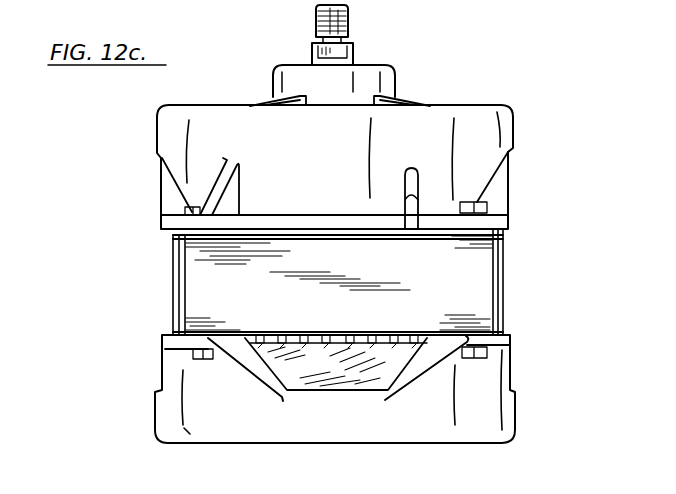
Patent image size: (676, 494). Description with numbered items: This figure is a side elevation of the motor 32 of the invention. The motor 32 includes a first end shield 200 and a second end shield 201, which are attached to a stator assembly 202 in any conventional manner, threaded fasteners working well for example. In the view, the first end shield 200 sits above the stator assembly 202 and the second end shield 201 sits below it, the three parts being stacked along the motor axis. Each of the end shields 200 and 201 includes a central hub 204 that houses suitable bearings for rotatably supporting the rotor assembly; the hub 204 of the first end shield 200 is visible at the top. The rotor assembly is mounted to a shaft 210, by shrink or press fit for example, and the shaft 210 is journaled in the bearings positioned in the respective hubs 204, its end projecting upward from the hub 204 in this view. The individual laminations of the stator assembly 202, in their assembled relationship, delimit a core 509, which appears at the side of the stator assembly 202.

The motor 32 is at (135, 437).
The first end shield 200 is at (507, 133).
The second end shield 201 is at (470, 443).
The stator assembly 202 is at (173, 280).
The central hub 204 is at (376, 66).
The shaft 210 is at (315, 14).
The core 509 is at (505, 273).